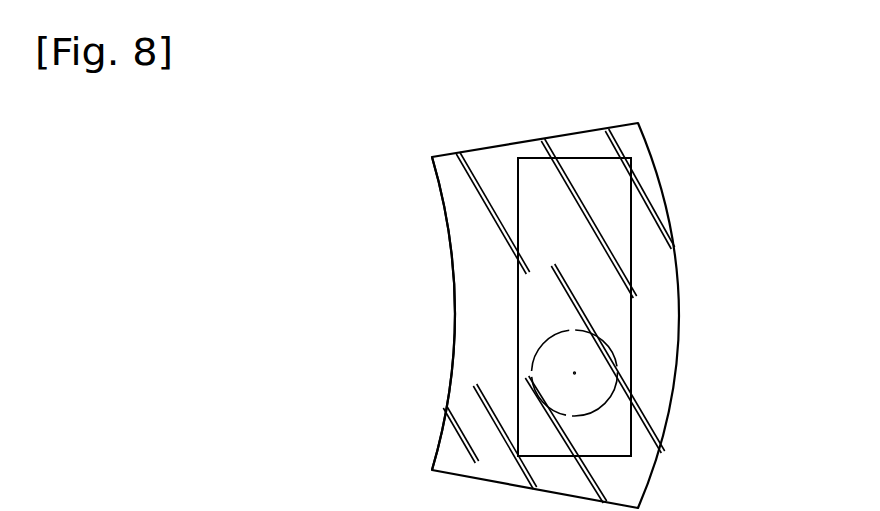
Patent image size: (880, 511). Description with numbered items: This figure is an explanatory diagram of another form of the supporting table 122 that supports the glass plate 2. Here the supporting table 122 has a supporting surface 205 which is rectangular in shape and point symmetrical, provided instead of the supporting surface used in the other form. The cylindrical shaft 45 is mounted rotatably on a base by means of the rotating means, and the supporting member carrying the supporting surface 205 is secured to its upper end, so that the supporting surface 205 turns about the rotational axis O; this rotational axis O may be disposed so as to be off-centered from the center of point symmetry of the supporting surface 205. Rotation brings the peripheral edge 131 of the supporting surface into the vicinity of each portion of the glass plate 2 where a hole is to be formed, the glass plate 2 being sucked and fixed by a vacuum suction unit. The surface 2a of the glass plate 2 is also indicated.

The glass plate 2 is at (442, 201).
The lens surface 2a is at (462, 246).
The cylindrical shaft 45 is at (537, 352).
The rotational axis O is at (575, 373).
The supporting table 122 is at (637, 163).
The supporting surface 205 is at (633, 274).
The peripheral edge 131 is at (633, 349).